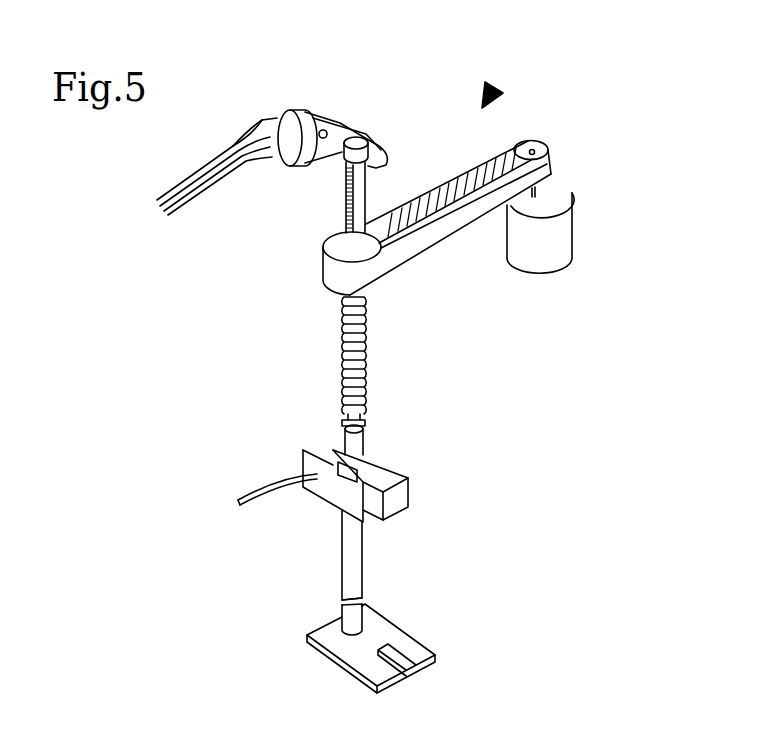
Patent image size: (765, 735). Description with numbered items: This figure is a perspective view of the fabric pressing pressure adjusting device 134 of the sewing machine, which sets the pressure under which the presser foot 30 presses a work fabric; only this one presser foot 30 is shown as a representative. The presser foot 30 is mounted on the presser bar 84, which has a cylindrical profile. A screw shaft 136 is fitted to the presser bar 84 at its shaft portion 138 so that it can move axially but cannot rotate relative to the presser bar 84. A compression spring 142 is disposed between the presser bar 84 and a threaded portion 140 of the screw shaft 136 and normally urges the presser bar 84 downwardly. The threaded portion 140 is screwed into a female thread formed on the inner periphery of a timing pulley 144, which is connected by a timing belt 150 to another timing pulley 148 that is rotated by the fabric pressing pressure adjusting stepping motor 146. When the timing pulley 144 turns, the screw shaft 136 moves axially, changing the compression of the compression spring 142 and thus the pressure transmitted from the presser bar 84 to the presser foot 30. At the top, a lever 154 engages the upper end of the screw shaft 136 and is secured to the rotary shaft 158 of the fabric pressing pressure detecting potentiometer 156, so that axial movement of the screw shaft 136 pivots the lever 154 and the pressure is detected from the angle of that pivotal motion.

The presser foot 30 is at (390, 630).
The presser bar 84 is at (353, 567).
The fabric pressing pressure adjusting device 134 is at (482, 108).
The screw shaft 136 is at (308, 213).
The shaft portion 138 is at (347, 352).
The threaded portion 140 is at (345, 170).
The compression spring 142 is at (345, 326).
The timing pulley 144 is at (333, 252).
The fabric pressing pressure adjusting stepping motor 146 is at (557, 233).
The timing pulley 148 is at (544, 146).
The timing belt 150 is at (433, 232).
The lever 154 is at (337, 133).
The fabric pressing pressure detecting potentiometer 156 is at (288, 122).
The rotary shaft 158 is at (323, 112).